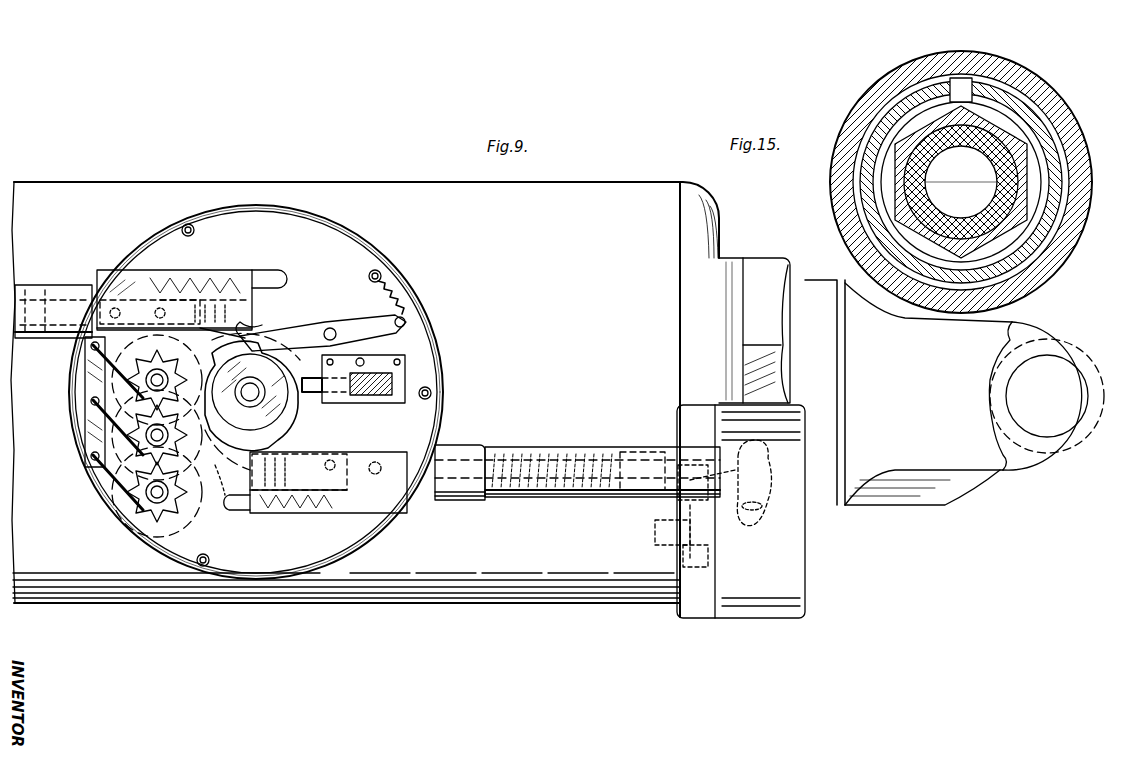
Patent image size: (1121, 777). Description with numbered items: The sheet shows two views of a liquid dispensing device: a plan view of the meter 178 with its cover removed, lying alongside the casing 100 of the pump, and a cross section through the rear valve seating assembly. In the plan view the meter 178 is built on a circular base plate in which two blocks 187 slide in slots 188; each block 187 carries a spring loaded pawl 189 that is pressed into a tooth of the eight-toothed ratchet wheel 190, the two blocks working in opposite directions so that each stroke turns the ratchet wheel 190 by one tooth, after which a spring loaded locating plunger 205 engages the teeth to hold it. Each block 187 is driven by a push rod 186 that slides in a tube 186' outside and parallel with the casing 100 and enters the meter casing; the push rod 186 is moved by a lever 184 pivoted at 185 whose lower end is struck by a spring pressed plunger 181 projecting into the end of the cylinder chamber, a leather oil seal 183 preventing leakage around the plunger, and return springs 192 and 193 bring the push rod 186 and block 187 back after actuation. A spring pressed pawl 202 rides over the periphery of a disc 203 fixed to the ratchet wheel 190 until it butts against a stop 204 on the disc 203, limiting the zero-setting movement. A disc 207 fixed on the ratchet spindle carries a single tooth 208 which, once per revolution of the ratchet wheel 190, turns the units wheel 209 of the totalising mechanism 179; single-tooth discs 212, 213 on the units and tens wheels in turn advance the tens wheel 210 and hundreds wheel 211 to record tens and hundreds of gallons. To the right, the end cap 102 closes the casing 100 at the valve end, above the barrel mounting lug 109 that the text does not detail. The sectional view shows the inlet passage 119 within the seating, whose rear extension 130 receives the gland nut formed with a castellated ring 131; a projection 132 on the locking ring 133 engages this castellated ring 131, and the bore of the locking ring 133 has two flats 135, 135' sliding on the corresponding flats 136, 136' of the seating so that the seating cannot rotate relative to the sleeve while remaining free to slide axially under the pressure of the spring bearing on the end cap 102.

In FIG. 9, the casing 100 is at (620, 182).
In FIG. 9, the end cap 102 is at (722, 248).
In FIG. 15, the end cap 102 is at (895, 196).
In FIG. 9, the lug 109 is at (1052, 466).
In FIG. 15, the inlet passage 119 is at (905, 232).
In FIG. 15, the rear extension 130 is at (1040, 245).
In FIG. 15, the castellated ring 131 is at (880, 145).
In FIG. 15, the projection 132 is at (950, 85).
In FIG. 15, the locking ring 133 is at (1022, 135).
In FIG. 15, the flat 135 is at (889, 179).
In FIG. 15, the flat 135' is at (982, 197).
In FIG. 15, the flat 136 is at (961, 182).
In FIG. 15, the flat 136' is at (961, 181).
In FIG. 9, the meter 178 is at (385, 228).
In FIG. 9, the totalising mechanism 179 is at (130, 538).
In FIG. 9, the spring pressed plunger 181 is at (655, 532).
In FIG. 9, the leather oil seal 183 is at (712, 560).
In FIG. 9, the lever 184 is at (755, 545).
In FIG. 9, the pivot 185 is at (760, 508).
In FIG. 9, the push rod 186 is at (686, 457).
In FIG. 9, the tube 186' is at (603, 508).
In FIG. 9, the block 187 is at (230, 270).
In FIG. 9, the slot 188 is at (110, 290).
In FIG. 9, the spring loaded pawl 189 is at (250, 318).
In FIG. 9, the ratchet wheel 190 is at (300, 420).
In FIG. 9, the return spring 192 is at (568, 447).
In FIG. 9, the return spring 193 is at (192, 268).
In FIG. 9, the spring pressed pawl 202 is at (318, 325).
In FIG. 9, the disc 203 is at (251, 396).
In FIG. 9, the stop 204 is at (282, 330).
In FIG. 9, the spring loaded locating plunger 205 is at (356, 403).
In FIG. 9, the disc 207 is at (207, 435).
In FIG. 9, the single tooth 208 is at (215, 530).
In FIG. 9, the units wheel 209 is at (95, 352).
In FIG. 9, the tens wheel 210 is at (95, 410).
In FIG. 9, the hundreds wheel 211 is at (115, 478).
In FIG. 9, the single-tooth disc 212 is at (90, 428).
In FIG. 9, the single-tooth disc 213 is at (128, 497).